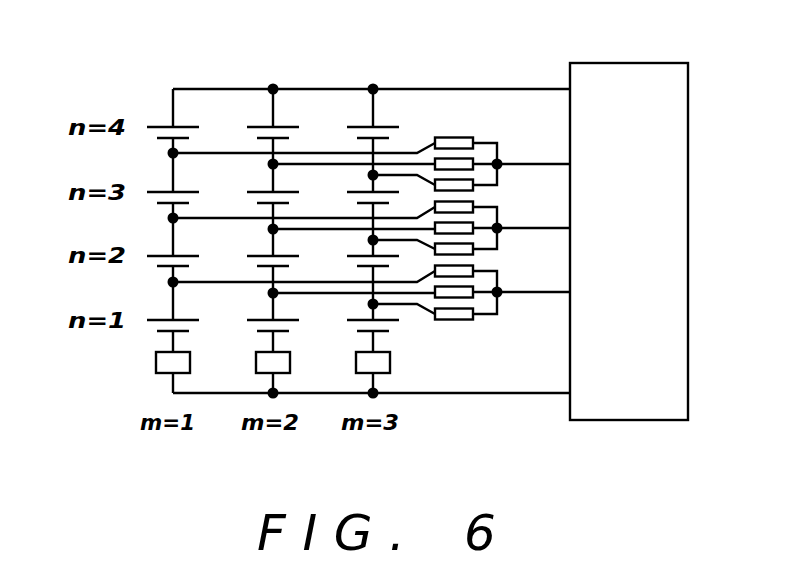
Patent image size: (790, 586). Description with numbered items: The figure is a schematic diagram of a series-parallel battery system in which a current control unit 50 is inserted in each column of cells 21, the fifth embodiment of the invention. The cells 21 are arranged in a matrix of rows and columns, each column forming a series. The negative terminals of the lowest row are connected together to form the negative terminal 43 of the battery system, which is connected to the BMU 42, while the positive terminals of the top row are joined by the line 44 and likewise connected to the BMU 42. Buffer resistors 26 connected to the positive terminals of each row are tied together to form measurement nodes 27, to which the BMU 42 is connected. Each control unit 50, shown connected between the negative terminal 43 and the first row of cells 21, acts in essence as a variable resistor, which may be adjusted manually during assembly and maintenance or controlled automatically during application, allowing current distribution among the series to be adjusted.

The positive bus line 44 is at (228, 89).
The cell 21 is at (288, 127).
The buffer resistor 26 is at (455, 137).
The BMU 42 is at (592, 63).
The control unit 50 is at (156, 362).
The negative terminal 43 is at (208, 393).
The measurement node 27 is at (499, 294).